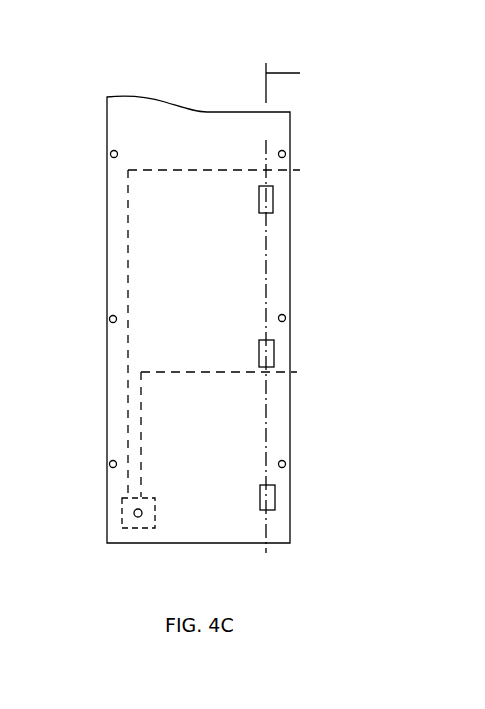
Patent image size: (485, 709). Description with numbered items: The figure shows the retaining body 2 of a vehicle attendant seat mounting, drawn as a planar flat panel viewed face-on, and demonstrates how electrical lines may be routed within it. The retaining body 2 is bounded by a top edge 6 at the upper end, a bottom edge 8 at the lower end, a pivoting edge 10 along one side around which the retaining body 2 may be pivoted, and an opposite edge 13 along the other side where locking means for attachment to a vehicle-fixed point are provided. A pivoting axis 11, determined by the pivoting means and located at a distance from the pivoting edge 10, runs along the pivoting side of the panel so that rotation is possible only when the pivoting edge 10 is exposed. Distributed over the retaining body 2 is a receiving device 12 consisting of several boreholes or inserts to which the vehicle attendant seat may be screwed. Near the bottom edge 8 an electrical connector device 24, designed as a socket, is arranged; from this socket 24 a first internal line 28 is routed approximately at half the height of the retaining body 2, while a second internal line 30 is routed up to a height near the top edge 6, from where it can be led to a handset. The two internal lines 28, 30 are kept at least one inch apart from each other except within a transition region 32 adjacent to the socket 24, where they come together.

The retaining body 2 is at (279, 270).
The top edge 6 is at (216, 101).
The bottom edge 8 is at (139, 548).
The pivoting edge 10 is at (293, 386).
The pivoting axis 11 is at (298, 83).
The receiving device 12 is at (124, 155).
The edge 13 is at (105, 250).
The electrical connector device 24 is at (157, 513).
The first internal line 28 is at (217, 370).
The second internal line 30 is at (212, 173).
The transition region 32 is at (102, 497).